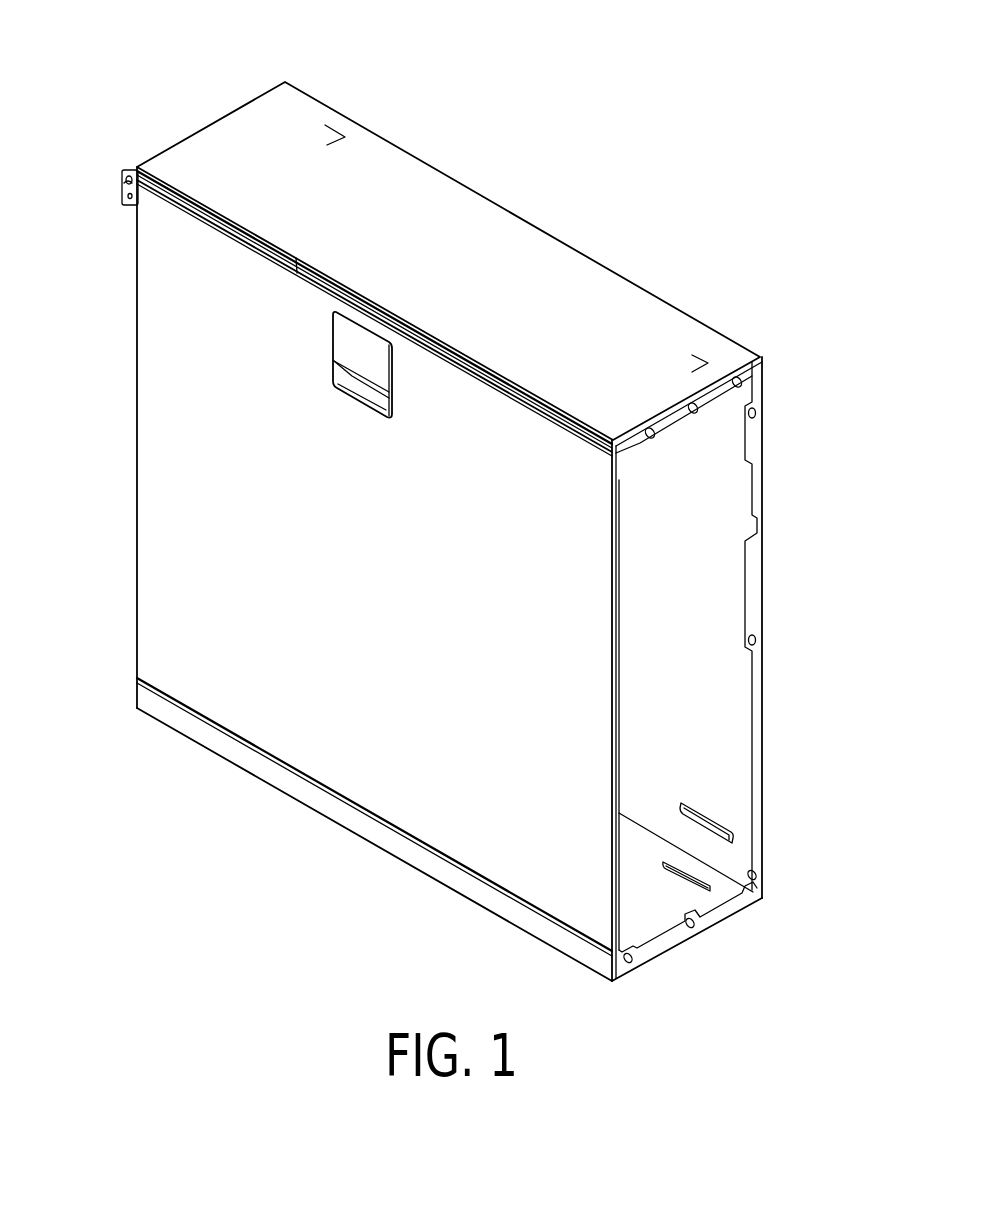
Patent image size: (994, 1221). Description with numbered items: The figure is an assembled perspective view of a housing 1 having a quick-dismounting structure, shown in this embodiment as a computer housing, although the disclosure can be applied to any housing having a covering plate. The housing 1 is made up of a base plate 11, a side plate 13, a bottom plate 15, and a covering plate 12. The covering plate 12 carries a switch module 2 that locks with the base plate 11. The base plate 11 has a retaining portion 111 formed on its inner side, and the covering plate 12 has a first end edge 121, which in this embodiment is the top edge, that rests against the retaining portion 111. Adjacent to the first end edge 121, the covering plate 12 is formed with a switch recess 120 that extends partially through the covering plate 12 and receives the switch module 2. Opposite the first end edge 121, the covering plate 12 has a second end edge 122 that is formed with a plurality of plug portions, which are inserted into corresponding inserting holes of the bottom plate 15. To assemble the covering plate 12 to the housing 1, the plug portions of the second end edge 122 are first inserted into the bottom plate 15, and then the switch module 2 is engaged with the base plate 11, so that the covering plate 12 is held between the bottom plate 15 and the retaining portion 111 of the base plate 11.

The housing 1 is at (689, 41).
The base plate 11 is at (440, 208).
The retaining portion 111 is at (296, 268).
The covering plate 12 is at (175, 322).
The first end edge 121 is at (238, 240).
The second end edge 122 is at (216, 727).
The switch module 2 is at (333, 337).
The switch recess 120 is at (397, 371).
The side plate 13 is at (711, 499).
The bottom plate 15 is at (727, 913).